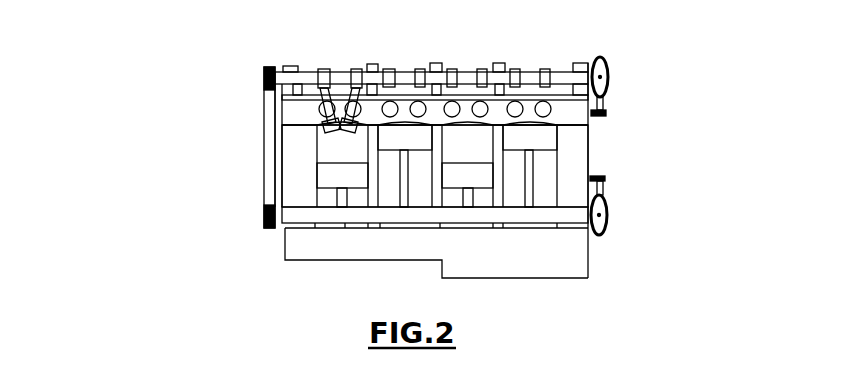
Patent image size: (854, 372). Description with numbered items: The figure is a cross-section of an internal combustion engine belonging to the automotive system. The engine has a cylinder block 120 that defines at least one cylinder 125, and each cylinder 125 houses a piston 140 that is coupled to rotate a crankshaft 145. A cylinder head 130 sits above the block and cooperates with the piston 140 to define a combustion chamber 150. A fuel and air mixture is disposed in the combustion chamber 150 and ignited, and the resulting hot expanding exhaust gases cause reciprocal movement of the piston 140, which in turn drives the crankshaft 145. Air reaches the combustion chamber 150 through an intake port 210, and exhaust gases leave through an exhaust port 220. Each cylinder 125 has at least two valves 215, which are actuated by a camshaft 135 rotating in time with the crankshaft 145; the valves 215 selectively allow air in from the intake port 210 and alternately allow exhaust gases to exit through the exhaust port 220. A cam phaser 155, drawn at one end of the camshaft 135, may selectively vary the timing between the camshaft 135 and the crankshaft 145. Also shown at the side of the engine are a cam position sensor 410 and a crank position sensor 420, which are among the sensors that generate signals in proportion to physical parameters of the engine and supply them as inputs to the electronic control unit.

The cylinder block 120 is at (285, 167).
The cylinder 125 is at (443, 150).
The cylinder head 130 is at (282, 121).
The camshaft 135 is at (337, 72).
The piston 140 is at (470, 173).
The crankshaft 145 is at (310, 218).
The combustion chamber 150 is at (535, 124).
The cam phaser 155 is at (263, 78).
The intake port 210 is at (455, 103).
The valves 215 is at (322, 127).
The exhaust port 220 is at (416, 102).
The cam position sensor 410 is at (606, 112).
The crank position sensor 420 is at (606, 179).